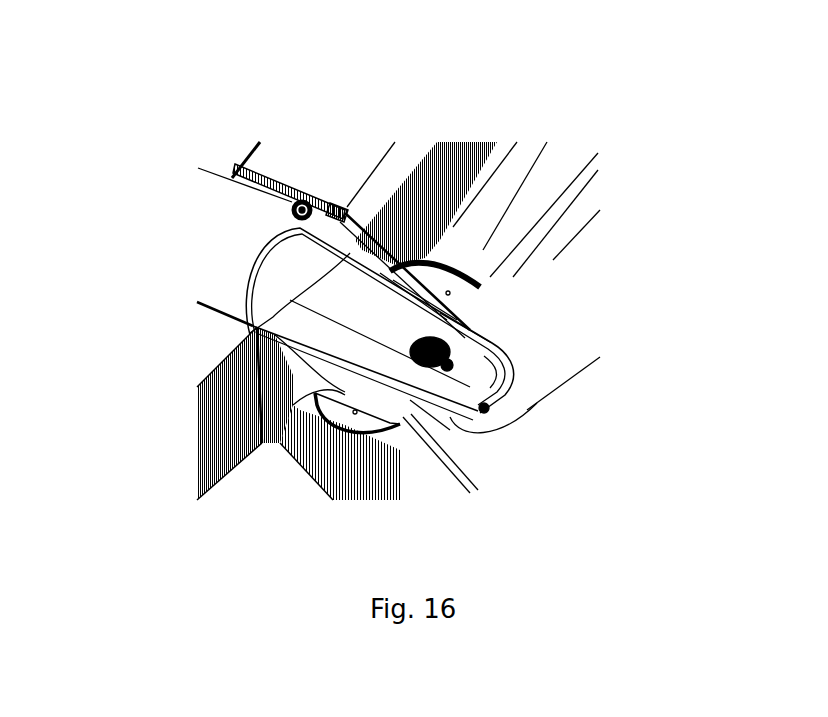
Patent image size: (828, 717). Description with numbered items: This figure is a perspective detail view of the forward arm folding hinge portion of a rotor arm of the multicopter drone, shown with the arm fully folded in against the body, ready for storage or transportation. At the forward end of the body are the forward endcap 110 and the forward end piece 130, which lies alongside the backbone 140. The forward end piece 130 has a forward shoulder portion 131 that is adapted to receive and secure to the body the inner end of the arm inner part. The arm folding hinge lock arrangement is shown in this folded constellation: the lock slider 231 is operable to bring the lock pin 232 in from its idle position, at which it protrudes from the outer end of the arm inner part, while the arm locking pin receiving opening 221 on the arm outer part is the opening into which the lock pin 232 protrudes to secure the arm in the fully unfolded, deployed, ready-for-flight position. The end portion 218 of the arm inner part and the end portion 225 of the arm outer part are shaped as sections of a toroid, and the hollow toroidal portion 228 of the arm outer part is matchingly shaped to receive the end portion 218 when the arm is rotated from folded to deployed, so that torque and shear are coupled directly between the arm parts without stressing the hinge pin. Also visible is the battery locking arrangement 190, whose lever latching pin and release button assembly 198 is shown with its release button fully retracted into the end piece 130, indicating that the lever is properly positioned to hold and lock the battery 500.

The forward endcap 110 is at (217, 340).
The forward end piece 130 is at (210, 220).
The forward shoulder portion 131 is at (290, 258).
The backbone 140 is at (220, 148).
The battery locking arrangement 190 is at (333, 204).
The lever latching pin and release button assembly 198 is at (300, 205).
The end portion of the arm inner part 218 is at (450, 420).
The arm locking pin receiving opening 221 is at (445, 338).
The end portion of the arm outer part 225 is at (350, 432).
The portion of the arm outer part 228 is at (487, 294).
The lock slider 231 is at (468, 285).
The lock pin 232 is at (487, 410).
The battery 500 is at (345, 165).